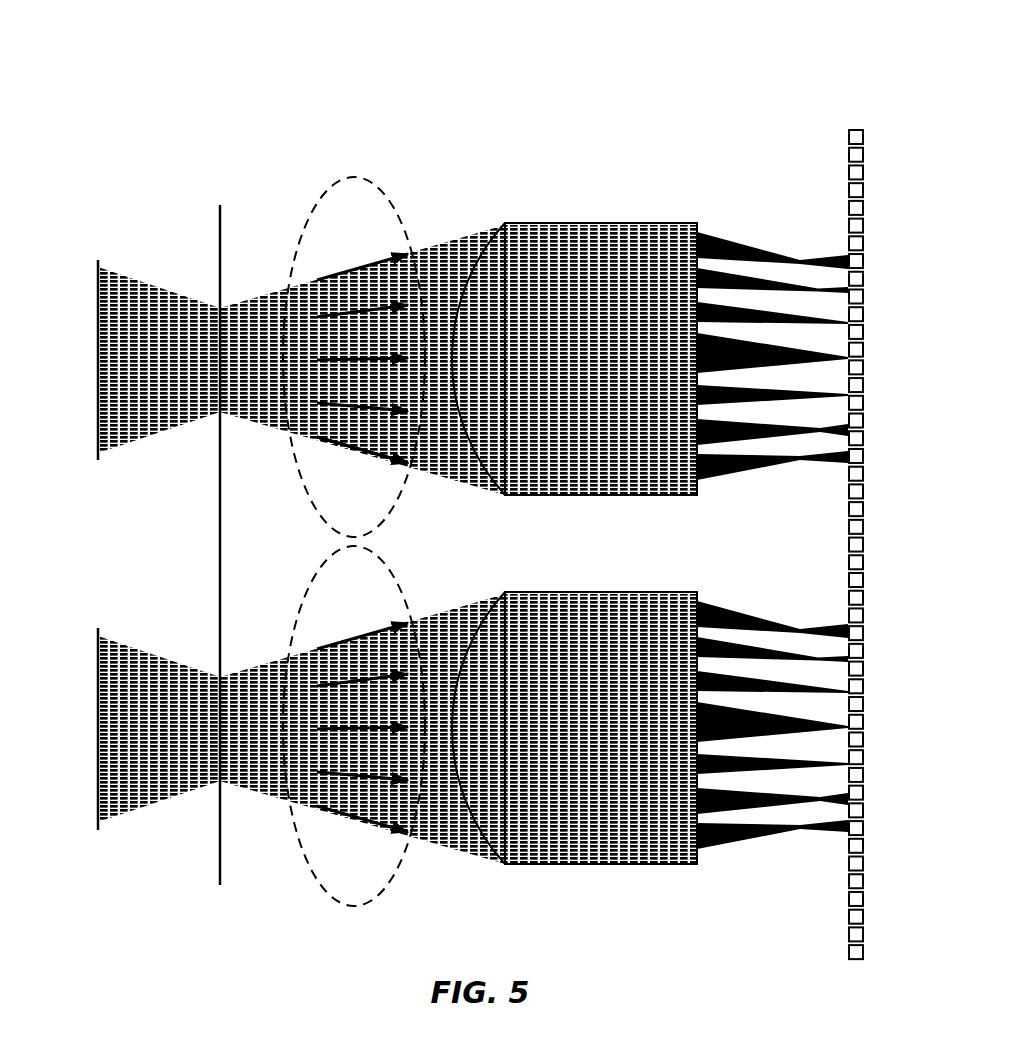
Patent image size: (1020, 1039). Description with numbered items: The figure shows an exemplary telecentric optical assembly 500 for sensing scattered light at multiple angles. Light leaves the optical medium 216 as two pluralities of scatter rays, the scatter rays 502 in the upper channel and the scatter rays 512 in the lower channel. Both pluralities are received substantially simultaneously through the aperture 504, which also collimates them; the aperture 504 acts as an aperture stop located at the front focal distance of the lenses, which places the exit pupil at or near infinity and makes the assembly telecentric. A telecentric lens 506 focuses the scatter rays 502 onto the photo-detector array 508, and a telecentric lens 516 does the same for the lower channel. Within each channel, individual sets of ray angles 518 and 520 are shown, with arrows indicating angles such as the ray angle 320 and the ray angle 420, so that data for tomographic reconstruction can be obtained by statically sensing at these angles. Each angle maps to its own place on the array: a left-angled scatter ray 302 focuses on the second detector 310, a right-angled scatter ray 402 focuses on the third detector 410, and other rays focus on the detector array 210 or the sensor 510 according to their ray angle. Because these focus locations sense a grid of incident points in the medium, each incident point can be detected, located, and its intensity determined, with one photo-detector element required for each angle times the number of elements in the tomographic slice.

The optical assembly 500 is at (710, 72).
The photo-detector array 508 is at (855, 130).
The optical medium 216 is at (96, 262).
The scatter rays 502 is at (96, 360).
The scatter rays 512 is at (96, 730).
The aperture 504 is at (218, 238).
The set of ray angles 518 is at (330, 190).
The set of ray angles 520 is at (358, 907).
The ray angle 320 is at (358, 268).
The ray angle 420 is at (380, 451).
The telecentric lens 506 is at (668, 222).
The telecentric lens 516 is at (665, 866).
The left-angled scatter ray 302 is at (756, 238).
The right-angled scatter ray 402 is at (756, 480).
The second detector 310 is at (864, 262).
The sensor 510 is at (864, 293).
The detector array 210 is at (864, 360).
The third detector 410 is at (864, 456).